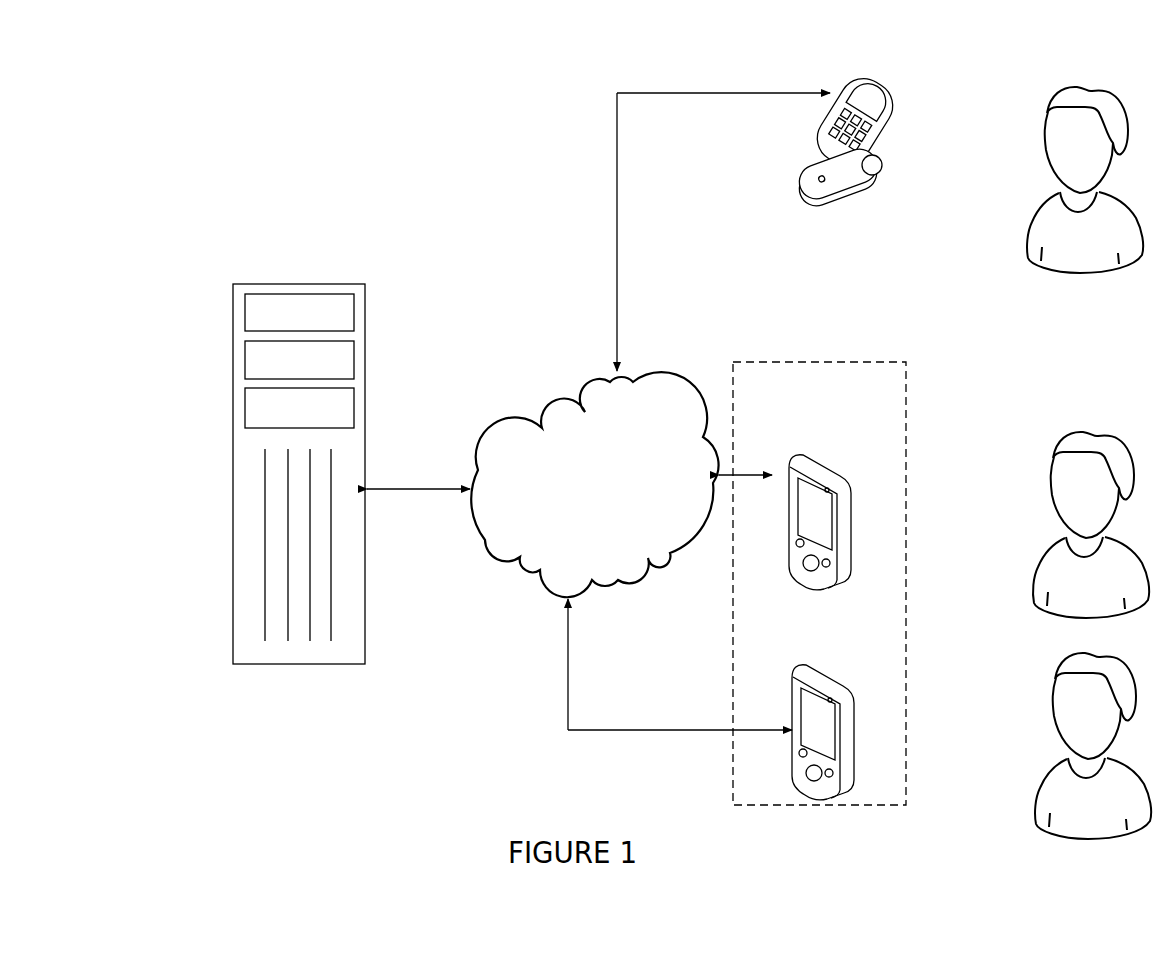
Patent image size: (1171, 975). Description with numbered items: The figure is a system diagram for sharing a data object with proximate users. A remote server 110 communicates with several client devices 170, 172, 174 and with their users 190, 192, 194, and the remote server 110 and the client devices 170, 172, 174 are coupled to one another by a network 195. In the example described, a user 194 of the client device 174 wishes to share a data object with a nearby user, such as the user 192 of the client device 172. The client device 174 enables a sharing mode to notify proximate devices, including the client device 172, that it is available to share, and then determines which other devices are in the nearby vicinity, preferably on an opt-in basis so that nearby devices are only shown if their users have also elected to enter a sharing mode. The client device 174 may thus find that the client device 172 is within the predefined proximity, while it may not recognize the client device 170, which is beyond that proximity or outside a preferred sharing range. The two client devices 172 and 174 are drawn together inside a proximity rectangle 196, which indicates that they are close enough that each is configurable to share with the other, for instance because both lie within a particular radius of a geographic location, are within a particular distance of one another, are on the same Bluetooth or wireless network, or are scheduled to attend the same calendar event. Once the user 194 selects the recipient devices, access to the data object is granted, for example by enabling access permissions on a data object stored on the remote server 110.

The remote server 110 is at (264, 281).
The client device 170 is at (871, 80).
The client device 172 is at (830, 462).
The client device 174 is at (835, 672).
The user 190 is at (1068, 86).
The user 192 is at (1064, 433).
The user 194 is at (1068, 658).
The network 195 is at (582, 495).
The proximity rectangle 196 is at (860, 805).